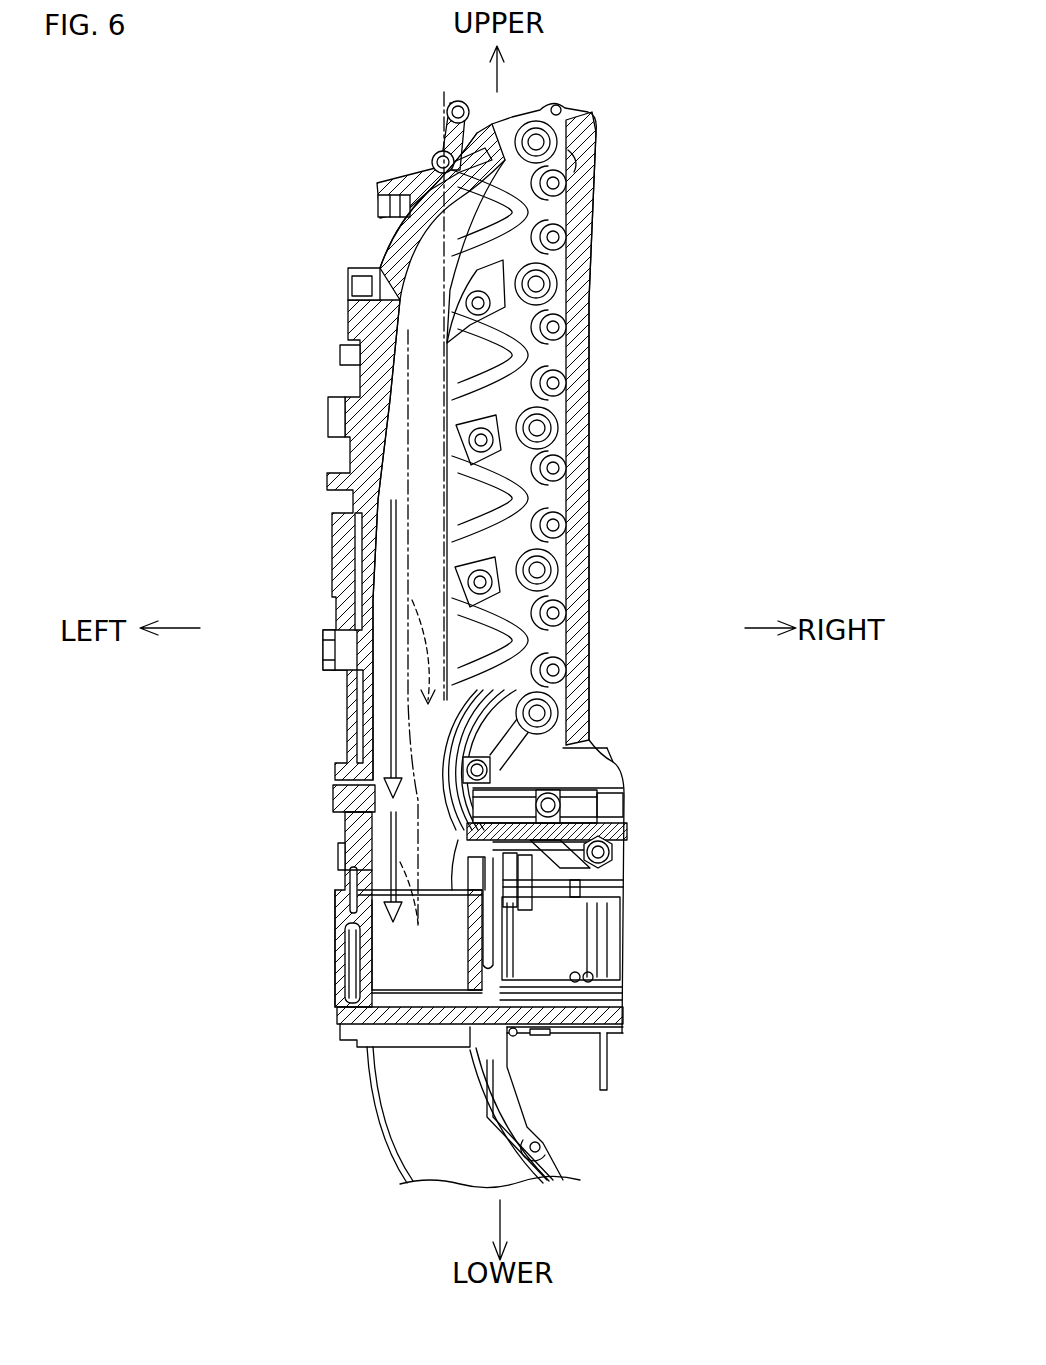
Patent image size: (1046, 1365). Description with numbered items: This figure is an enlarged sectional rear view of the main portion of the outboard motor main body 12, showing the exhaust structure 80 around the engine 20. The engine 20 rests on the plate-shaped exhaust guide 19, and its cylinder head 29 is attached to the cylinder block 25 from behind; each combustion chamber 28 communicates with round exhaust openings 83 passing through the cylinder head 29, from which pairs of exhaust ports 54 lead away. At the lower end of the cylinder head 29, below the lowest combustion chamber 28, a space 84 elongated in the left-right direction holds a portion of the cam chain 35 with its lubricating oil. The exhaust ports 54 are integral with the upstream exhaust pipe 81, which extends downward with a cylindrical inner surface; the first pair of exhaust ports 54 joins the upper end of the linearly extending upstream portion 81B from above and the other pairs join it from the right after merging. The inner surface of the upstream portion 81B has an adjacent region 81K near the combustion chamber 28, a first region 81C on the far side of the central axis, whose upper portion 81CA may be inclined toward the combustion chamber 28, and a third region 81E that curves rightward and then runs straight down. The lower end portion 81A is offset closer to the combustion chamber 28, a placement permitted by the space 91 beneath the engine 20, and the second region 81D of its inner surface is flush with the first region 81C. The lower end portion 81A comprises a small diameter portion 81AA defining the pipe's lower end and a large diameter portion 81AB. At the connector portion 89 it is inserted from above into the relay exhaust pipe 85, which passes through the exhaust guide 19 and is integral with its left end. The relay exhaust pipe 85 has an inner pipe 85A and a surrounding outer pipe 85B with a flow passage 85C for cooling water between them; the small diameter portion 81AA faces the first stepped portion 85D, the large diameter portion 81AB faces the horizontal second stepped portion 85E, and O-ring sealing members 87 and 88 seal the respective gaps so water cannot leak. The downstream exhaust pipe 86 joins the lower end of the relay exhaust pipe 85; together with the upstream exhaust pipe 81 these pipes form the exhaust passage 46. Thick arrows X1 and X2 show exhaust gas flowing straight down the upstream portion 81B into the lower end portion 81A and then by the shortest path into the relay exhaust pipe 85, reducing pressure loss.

The outboard motor main body 12 is at (665, 56).
The engine 20 is at (404, 166).
The cylinder block 25 is at (560, 145).
The cylinder head 29 is at (590, 156).
The combustion chamber 28 is at (590, 182).
The exhaust ports 54 is at (540, 246).
The exhaust opening 83 is at (583, 304).
The space 84 is at (608, 767).
The cam chain 35 is at (612, 802).
The space 91 is at (600, 838).
The large diameter portion 81AB is at (615, 863).
The sealing member 88 is at (505, 900).
The sealing member 87 is at (505, 940).
The small diameter portion 81AA is at (505, 975).
The third region 81E is at (580, 976).
The exhaust guide 19 is at (620, 996).
The exhaust structure 80 is at (350, 246).
The upstream exhaust pipe 81 is at (340, 812).
The lower end portion 81A is at (345, 835).
The upstream portion 81B is at (335, 778).
The first region 81C is at (375, 696).
The upper portion 81CA is at (345, 414).
The second region 81D is at (340, 800).
The adjacent region 81K is at (430, 768).
The exhaust passage 46 is at (183, 1100).
The relay exhaust pipe 85 is at (237, 975).
The inner pipe 85A is at (342, 1000).
The outer pipe 85B is at (342, 1006).
The flow passage 85C is at (343, 972).
The first stepped portion 85D is at (345, 901).
The second stepped portion 85E is at (345, 872).
The downstream exhaust pipe 86 is at (390, 1101).
The connector portion 89 is at (326, 856).
The thick solid arrow X1 is at (392, 566).
The thick solid arrow X2 is at (411, 886).